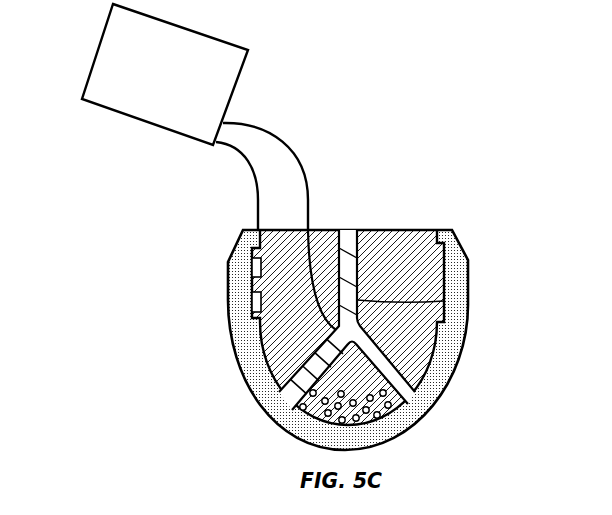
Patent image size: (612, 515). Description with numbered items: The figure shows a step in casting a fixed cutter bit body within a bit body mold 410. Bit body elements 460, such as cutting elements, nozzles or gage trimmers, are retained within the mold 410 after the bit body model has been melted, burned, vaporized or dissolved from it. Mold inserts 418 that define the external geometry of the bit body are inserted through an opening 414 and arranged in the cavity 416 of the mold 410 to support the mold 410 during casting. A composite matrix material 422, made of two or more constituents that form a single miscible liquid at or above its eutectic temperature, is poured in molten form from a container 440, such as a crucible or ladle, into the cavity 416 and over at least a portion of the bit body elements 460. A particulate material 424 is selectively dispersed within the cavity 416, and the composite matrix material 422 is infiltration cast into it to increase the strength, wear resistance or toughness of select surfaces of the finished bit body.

The container 440 is at (112, 55).
The composite matrix material 422 is at (262, 147).
The mold inserts 418 is at (352, 238).
The opening 414 is at (410, 242).
The bit body mold 410 is at (462, 268).
The bit body elements 460 is at (254, 302).
The cavity 416 is at (432, 333).
The particulate material 424 is at (316, 414).